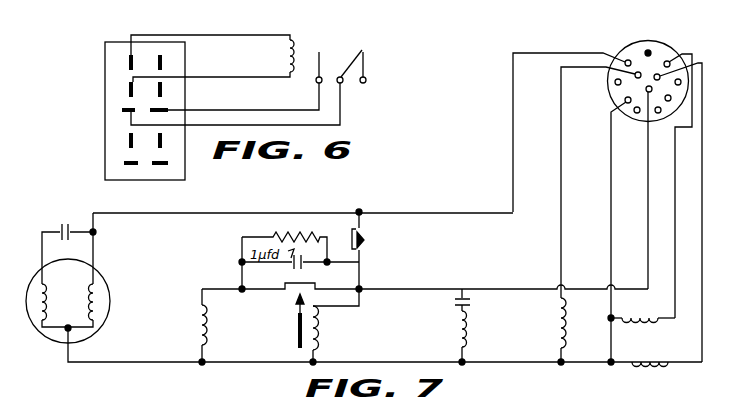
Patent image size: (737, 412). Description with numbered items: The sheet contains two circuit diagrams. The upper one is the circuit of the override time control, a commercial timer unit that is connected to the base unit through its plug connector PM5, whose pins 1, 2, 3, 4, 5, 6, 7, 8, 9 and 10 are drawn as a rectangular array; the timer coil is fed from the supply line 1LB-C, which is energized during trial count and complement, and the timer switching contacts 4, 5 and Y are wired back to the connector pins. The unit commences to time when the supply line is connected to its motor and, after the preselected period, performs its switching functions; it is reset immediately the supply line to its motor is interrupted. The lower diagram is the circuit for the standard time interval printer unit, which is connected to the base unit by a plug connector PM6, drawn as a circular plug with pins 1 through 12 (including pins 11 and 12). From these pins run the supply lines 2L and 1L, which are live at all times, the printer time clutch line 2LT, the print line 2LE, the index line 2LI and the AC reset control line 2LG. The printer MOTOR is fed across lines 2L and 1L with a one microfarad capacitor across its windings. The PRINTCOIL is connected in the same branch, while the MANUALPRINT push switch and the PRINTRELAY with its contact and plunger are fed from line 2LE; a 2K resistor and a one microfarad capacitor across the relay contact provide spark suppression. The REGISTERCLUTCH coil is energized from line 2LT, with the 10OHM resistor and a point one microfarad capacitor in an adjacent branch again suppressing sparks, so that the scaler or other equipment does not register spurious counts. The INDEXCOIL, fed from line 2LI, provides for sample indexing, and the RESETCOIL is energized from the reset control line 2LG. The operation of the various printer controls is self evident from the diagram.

In FIG. 6, the plug connector PM5 is at (105, 137).
In FIG. 6, the pin 1 is at (246, 19).
In FIG. 7, the pin 1 is at (639, 108).
In FIG. 6, the pin 2 is at (246, 76).
In FIG. 7, the pin 2 is at (632, 101).
In FIG. 6, the pin 3 is at (154, 90).
In FIG. 7, the pin 3 is at (621, 83).
In FIG. 6, the pin 4 / contact 4 is at (216, 75).
In FIG. 7, the pin 4 / contact 4 is at (631, 64).
In FIG. 6, the pin 5 / contact 5 is at (252, 80).
In FIG. 7, the pin 5 / contact 5 is at (641, 68).
In FIG. 6, the pin 6 is at (121, 109).
In FIG. 7, the pin 6 is at (662, 66).
In FIG. 6, the pin 7 is at (154, 144).
In FIG. 7, the pin 7 is at (674, 84).
In FIG. 6, the pin 8 is at (121, 144).
In FIG. 7, the pin 8 is at (665, 94).
In FIG. 6, the pin 9 is at (156, 163).
In FIG. 7, the pin 9 is at (657, 104).
In FIG. 6, the pin 10 is at (121, 163).
In FIG. 7, the pin 10 is at (647, 89).
In FIG. 7, the pin 11 is at (635, 84).
In FIG. 7, the pin 12 is at (652, 77).
In FIG. 6, the contact Y is at (362, 77).
In FIG. 6, the relay contact line 1LB-C is at (212, 65).
In FIG. 7, the plug connector PM6 is at (634, 42).
In FIG. 7, the supply line 2L is at (560, 132).
In FIG. 7, the printer time clutch line 2LT is at (589, 182).
In FIG. 7, the supply line 1L is at (610, 232).
In FIG. 7, the print line 2LE is at (640, 190).
In FIG. 7, the index line 2LI is at (675, 186).
In FIG. 7, the AC reset control line 2LG is at (684, 212).
In FIG. 7, the motor MOTOR is at (138, 274).
In FIG. 7, the print coil PRINTCOIL is at (198, 331).
In FIG. 7, the 2K resistor 2K is at (284, 241).
In FIG. 7, the manual print switch MANUALPRINT is at (392, 250).
In FIG. 7, the print relay PRINTRELAY is at (322, 345).
In FIG. 7, the 10 ohm resistor and .1 capacitor 10OHM is at (455, 333).
In FIG. 7, the register clutch REGISTERCLUTCH is at (519, 331).
In FIG. 7, the index coil INDEXCOIL is at (641, 308).
In FIG. 7, the reset coil RESETCOIL is at (638, 349).